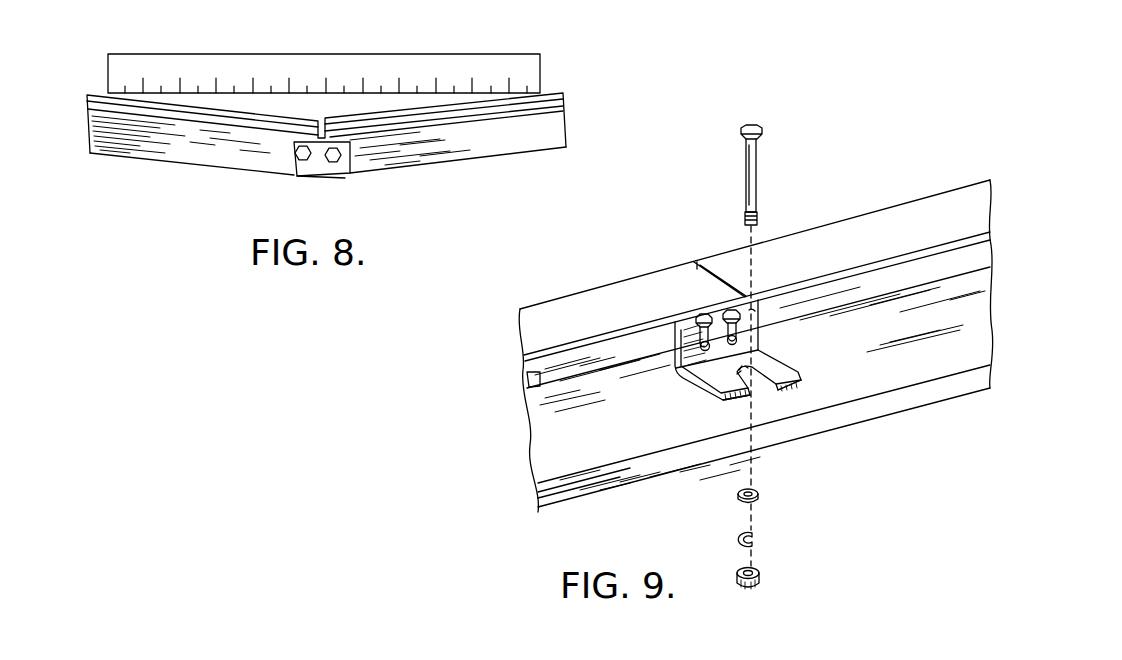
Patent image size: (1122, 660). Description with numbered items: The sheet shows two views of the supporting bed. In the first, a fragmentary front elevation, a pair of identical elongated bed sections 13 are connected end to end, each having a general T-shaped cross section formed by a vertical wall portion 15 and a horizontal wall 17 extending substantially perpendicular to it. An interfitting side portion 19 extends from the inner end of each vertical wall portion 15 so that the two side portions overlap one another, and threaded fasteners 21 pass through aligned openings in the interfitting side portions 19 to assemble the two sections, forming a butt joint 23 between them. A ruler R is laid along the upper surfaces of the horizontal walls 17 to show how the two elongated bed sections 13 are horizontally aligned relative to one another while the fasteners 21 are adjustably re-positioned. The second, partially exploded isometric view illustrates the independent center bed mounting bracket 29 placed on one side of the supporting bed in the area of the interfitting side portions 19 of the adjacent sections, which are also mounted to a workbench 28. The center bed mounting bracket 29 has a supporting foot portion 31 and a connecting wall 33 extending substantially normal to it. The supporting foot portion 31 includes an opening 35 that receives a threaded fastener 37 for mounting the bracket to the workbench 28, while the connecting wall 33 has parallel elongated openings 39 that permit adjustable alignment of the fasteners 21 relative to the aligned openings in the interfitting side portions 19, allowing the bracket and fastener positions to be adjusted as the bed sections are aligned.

In FIG. 8, the ruler R is at (333, 70).
In FIG. 8, the elongated bed section 13 is at (170, 147).
In FIG. 9, the elongated bed section 13 is at (513, 333).
In FIG. 8, the vertical wall portion 15 is at (215, 148).
In FIG. 9, the vertical wall portion 15 is at (530, 381).
In FIG. 9, the horizontal wall 17 is at (597, 307).
In FIG. 8, the interfitting side portion 19 is at (304, 178).
In FIG. 8, the threaded fastener 21 is at (296, 156).
In FIG. 9, the threaded fastener 21 is at (757, 308).
In FIG. 9, the butt joint 23 is at (710, 270).
In FIG. 9, the workbench 28 is at (903, 370).
In FIG. 9, the center bed mounting bracket 29 is at (670, 389).
In FIG. 9, the supporting foot portion 31 is at (783, 372).
In FIG. 9, the connecting wall 33 is at (756, 312).
In FIG. 9, the opening 35 is at (763, 388).
In FIG. 9, the threaded fastener 37 is at (757, 190).
In FIG. 9, the elongated opening 39 is at (745, 340).